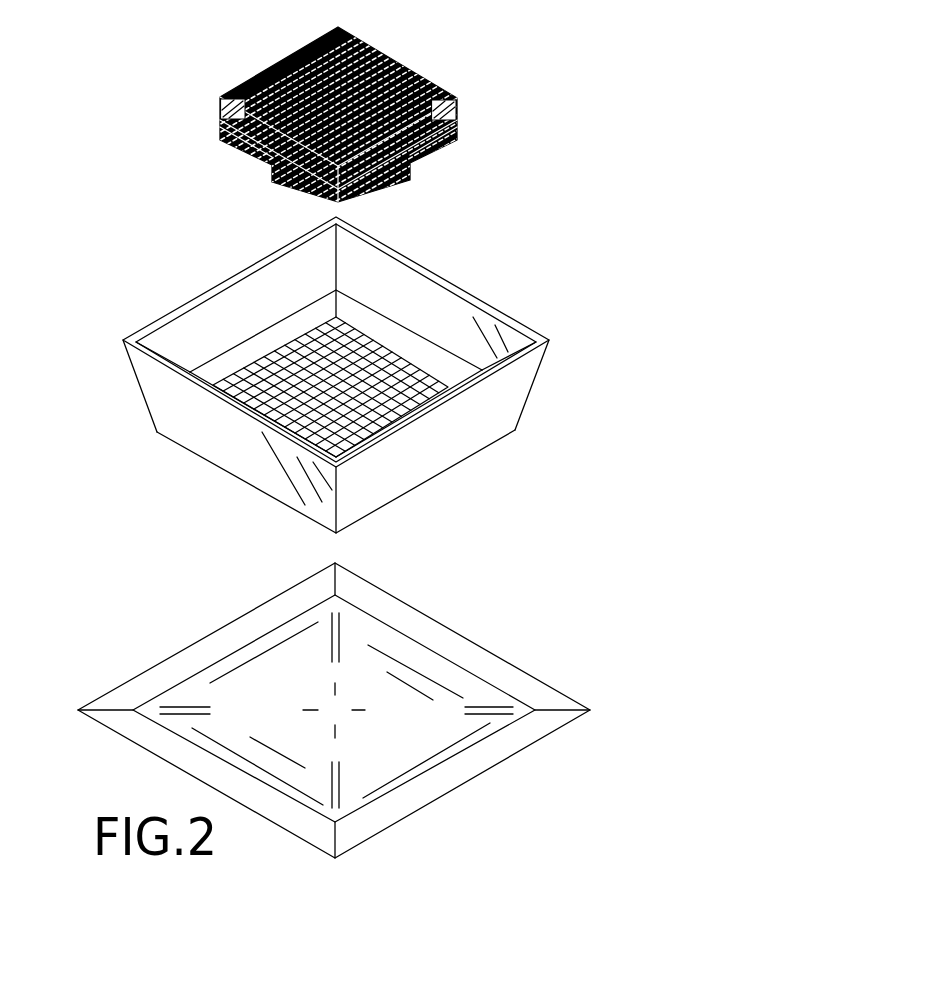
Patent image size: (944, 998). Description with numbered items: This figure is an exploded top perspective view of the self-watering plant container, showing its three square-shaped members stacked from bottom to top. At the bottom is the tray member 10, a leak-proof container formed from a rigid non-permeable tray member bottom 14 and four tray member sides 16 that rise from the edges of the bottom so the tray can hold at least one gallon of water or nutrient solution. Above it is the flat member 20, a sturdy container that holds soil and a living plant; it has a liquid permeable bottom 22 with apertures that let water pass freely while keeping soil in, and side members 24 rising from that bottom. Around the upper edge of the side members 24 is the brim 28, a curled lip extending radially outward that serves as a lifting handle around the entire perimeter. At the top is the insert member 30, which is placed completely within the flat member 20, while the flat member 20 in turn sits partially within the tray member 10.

The tray member 10 is at (337, 709).
The tray member bottom 14 is at (237, 693).
The tray member side 16 is at (435, 784).
The flat member 20 is at (313, 361).
The liquid permeable bottom 22 is at (310, 357).
The side member 24 is at (293, 280).
The brim 28 is at (123, 340).
The insert member 30 is at (420, 60).